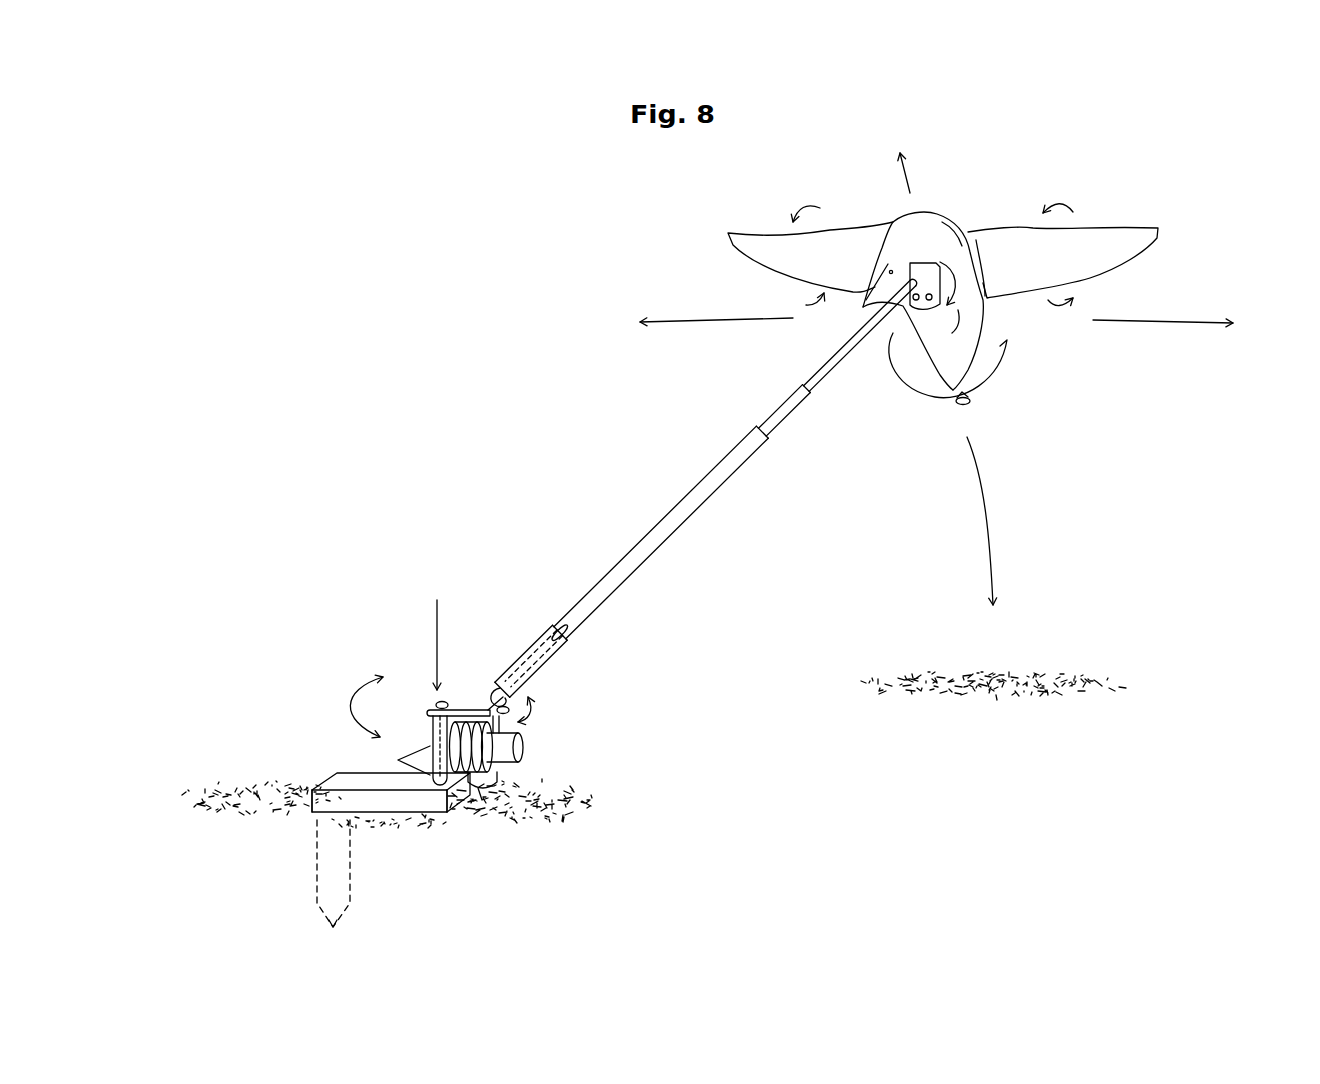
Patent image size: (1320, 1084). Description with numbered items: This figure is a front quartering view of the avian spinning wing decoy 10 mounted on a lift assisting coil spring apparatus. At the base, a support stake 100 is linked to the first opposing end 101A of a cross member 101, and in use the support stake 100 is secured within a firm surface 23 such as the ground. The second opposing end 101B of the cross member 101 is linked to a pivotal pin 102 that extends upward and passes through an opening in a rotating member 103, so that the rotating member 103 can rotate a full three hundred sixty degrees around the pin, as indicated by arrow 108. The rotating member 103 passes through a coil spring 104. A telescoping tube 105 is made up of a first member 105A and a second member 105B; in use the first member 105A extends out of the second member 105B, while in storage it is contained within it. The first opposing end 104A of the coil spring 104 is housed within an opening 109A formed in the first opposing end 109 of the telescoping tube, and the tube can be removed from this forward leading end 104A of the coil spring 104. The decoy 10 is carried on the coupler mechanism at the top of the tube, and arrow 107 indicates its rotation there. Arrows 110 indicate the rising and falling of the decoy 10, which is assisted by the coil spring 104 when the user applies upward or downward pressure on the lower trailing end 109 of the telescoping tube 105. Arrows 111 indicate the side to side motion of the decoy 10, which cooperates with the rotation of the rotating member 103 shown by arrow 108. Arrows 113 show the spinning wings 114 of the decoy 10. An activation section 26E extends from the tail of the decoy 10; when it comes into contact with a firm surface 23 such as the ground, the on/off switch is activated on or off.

The avian spinning wing decoy 10 is at (940, 237).
The firm surface 23 is at (540, 810).
The activation section 26E is at (969, 403).
The support stake 100 is at (327, 862).
The cross member 101 is at (351, 826).
The first opposing end 101A is at (310, 803).
The second opposing end 101B is at (460, 820).
The pivotal pin 102 is at (437, 752).
The rotating member 103 is at (500, 752).
The coil spring 104 is at (480, 788).
The first opposing end of the coil spring 104A is at (554, 653).
The telescoping tube 105 is at (735, 458).
The first member 105A is at (810, 391).
The second member 105B is at (667, 514).
The arrow 107 is at (937, 306).
The arrow 108 is at (437, 657).
The first opposing end of the telescoping tube 109 is at (514, 639).
The opening 109A is at (497, 689).
The arrows 110 is at (912, 180).
The arrows 111 is at (710, 320).
The arrows 113 is at (1053, 200).
The spinning wings 114 is at (793, 256).